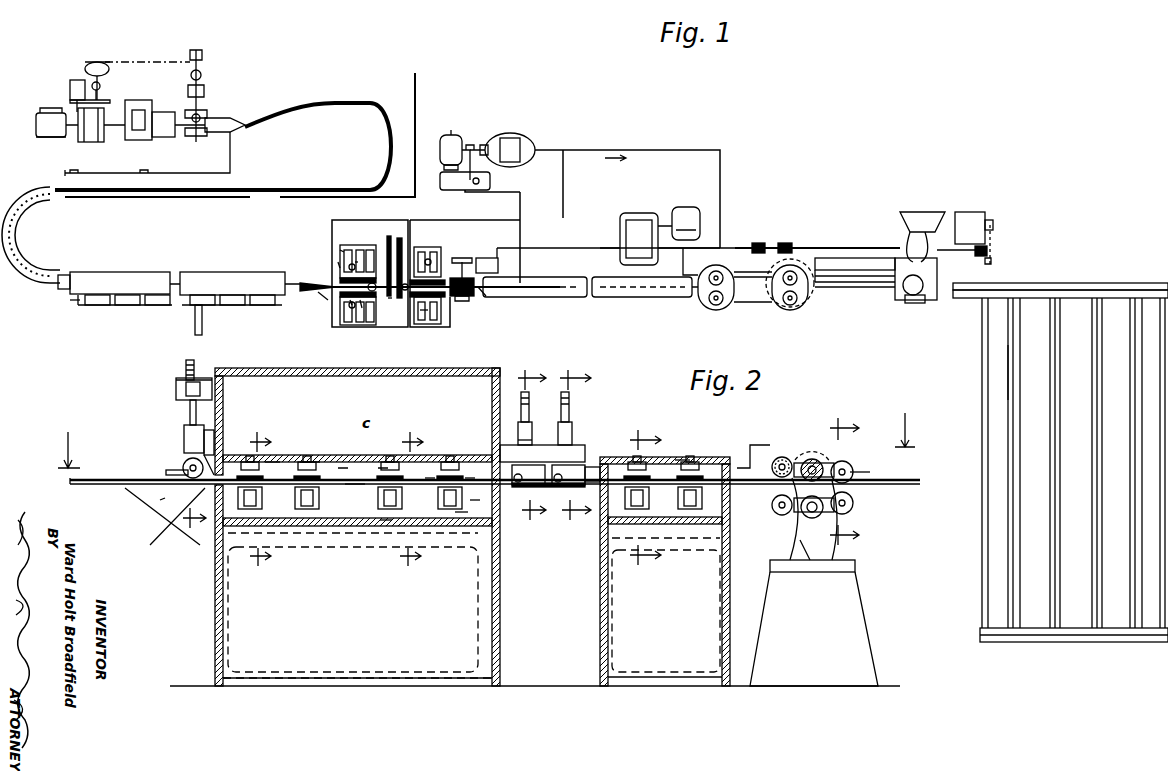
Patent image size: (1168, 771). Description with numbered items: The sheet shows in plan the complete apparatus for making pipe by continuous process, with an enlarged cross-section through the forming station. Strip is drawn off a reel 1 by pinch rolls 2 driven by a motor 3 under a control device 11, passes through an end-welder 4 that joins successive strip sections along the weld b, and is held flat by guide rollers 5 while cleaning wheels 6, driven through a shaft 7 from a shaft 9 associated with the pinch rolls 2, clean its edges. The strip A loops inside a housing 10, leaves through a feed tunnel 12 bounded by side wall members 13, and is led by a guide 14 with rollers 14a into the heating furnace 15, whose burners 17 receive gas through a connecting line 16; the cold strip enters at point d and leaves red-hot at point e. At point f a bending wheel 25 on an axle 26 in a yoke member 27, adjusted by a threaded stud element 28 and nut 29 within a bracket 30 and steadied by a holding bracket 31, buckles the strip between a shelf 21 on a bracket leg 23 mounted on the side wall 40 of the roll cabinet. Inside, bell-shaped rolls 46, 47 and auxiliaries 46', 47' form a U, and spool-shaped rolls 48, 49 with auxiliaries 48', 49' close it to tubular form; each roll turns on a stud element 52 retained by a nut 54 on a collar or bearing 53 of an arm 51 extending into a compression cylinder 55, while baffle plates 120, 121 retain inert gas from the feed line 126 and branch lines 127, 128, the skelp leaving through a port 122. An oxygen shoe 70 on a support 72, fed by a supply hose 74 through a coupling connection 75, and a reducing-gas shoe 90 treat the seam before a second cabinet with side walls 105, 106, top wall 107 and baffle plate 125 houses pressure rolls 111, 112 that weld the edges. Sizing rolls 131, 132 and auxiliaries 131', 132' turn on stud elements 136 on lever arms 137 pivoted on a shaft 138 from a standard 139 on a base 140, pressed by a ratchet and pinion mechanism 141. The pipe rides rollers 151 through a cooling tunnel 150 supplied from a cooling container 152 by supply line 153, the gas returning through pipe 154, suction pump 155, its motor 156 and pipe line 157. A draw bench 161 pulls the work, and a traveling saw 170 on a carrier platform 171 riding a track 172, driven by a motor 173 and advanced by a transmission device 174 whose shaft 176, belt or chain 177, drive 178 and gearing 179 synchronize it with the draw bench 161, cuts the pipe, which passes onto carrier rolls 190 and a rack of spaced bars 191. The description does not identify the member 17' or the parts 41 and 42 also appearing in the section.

In FIG. 1, the reel 1 is at (45, 113).
In FIG. 1, the pinch rolls 2 is at (86, 142).
In FIG. 1, the motor 3 is at (70, 90).
In FIG. 2, the motor 3 is at (485, 440).
In FIG. 1, the end-welder 4 is at (138, 140).
In FIG. 2, the end-welder 4 is at (190, 450).
In FIG. 1, the guide roller 5 is at (170, 137).
In FIG. 2, the guide roller 5 is at (260, 500).
In FIG. 1, the cleaning wheels 6 is at (160, 62).
In FIG. 2, the cleaning wheels 6 is at (412, 502).
In FIG. 1, the shaft 7 is at (202, 112).
In FIG. 2, the shaft 7 is at (532, 447).
In FIG. 1, the shaft 9 is at (102, 86).
In FIG. 2, the shaft 9 is at (575, 447).
In FIG. 1, the housing 10 is at (413, 84).
In FIG. 1, the control device 11 is at (97, 62).
In FIG. 2, the control device 11 is at (649, 498).
In FIG. 1, the feed tunnel 12 is at (105, 198).
In FIG. 2, the feed tunnel 12 is at (848, 480).
In FIG. 1, the side wall members 13 is at (172, 175).
In FIG. 1, the guide 14 is at (18, 258).
In FIG. 1, the rollers 14a is at (12, 228).
In FIG. 1, the heating furnace 15 is at (152, 268).
In FIG. 1, the connecting line 16 is at (130, 306).
In FIG. 1, the gas jets or burners 17 is at (67, 308).
In FIG. 2, the support arm 17' is at (335, 543).
In FIG. 2, the shelf 21 is at (140, 486).
In FIG. 2, the bracket leg 23 is at (161, 516).
In FIG. 1, the bending wheel 25 is at (318, 295).
In FIG. 2, the bending wheel 25 is at (183, 466).
In FIG. 2, the axle 26 is at (186, 450).
In FIG. 2, the yoke member 27 is at (188, 425).
In FIG. 2, the threaded stud element 28 is at (186, 365).
In FIG. 2, the adjusting nut 29 is at (176, 392).
In FIG. 2, the bracket 30 is at (176, 380).
In FIG. 2, the holding bracket 31 is at (215, 440).
In FIG. 2, the side wall 40 is at (215, 592).
In FIG. 2, the cabinet wall 41 is at (500, 604).
In FIG. 2, the upper compartment 42 is at (365, 376).
In FIG. 1, the forming and shaping roll 46 is at (332, 297).
In FIG. 1, the auxiliary bell roll 46' is at (331, 327).
In FIG. 1, the forming and shaping roll 47 is at (317, 252).
In FIG. 2, the forming and shaping roll 47 is at (316, 491).
In FIG. 1, the auxiliary bell roll 47' is at (375, 231).
In FIG. 2, the auxiliary bell roll 47' is at (475, 448).
In FIG. 1, the spool-shaped forming roll 48 is at (359, 331).
In FIG. 1, the auxiliary spool roll 48' is at (389, 329).
In FIG. 1, the spool-shaped forming roll 49 is at (339, 331).
In FIG. 1, the auxiliary spool roll 49' is at (403, 249).
In FIG. 2, the adjustable arm 51 is at (245, 510).
In FIG. 2, the stud element 52 is at (272, 462).
In FIG. 2, the collar or bearing 53 is at (300, 512).
In FIG. 2, the nut 54 is at (342, 468).
In FIG. 1, the compression cylinder 55 is at (340, 252).
In FIG. 2, the compression cylinder 55 is at (385, 522).
In FIG. 1, the shoe 70 is at (373, 292).
In FIG. 2, the shoe 70 is at (532, 481).
In FIG. 2, the support 72 is at (540, 445).
In FIG. 2, the supply hose 74 is at (521, 402).
In FIG. 2, the coupling connection 75 is at (520, 445).
In FIG. 1, the shoe 90 is at (403, 292).
In FIG. 2, the shoe 90 is at (598, 467).
In FIG. 2, the side wall 105 is at (600, 584).
In FIG. 2, the side wall 106 is at (730, 566).
In FIG. 2, the top wall 107 is at (752, 445).
In FIG. 1, the pressure roll 111 is at (427, 312).
In FIG. 1, the pressure roll 112 is at (432, 272).
In FIG. 2, the baffle plate 120 is at (312, 462).
In FIG. 2, the baffle plate 121 is at (360, 486).
In FIG. 2, the port 122 is at (478, 502).
In FIG. 1, the baffle plate 125 is at (688, 207).
In FIG. 2, the baffle plate 125 is at (695, 512).
In FIG. 1, the feed line 126 is at (540, 232).
In FIG. 1, the branch line 127 is at (332, 232).
In FIG. 1, the branch line 128 is at (428, 258).
In FIG. 1, the shaping and sizing roll 131 is at (496, 292).
In FIG. 2, the shaping and sizing roll 131 is at (894, 471).
In FIG. 1, the auxiliary shaping and forming roll 131' is at (461, 297).
In FIG. 2, the auxiliary shaping and forming roll 131' is at (777, 446).
In FIG. 2, the shaping and sizing roll 132 is at (880, 506).
In FIG. 2, the auxiliary shaping and forming roll 132' is at (786, 514).
In FIG. 2, the stud element 136 is at (852, 470).
In FIG. 2, the lever arm 137 is at (796, 505).
In FIG. 2, the shaft 138 is at (802, 540).
In FIG. 2, the standard 139 is at (858, 566).
In FIG. 2, the base 140 is at (814, 629).
In FIG. 2, the ratchet and pinion mechanism 141 is at (830, 456).
In FIG. 1, the cooling tunnel 150 is at (545, 297).
In FIG. 1, the rollers 151 is at (580, 277).
In FIG. 1, the cooling container 152 is at (530, 135).
In FIG. 1, the supply line 153 is at (655, 150).
In FIG. 1, the pipe 154 is at (522, 192).
In FIG. 1, the suction pump 155 is at (490, 178).
In FIG. 1, the motor 156 is at (452, 135).
In FIG. 1, the pipe line 157 is at (472, 145).
In FIG. 1, the continuous draw bench 161 is at (742, 310).
In FIG. 1, the traveling saw 170 is at (903, 300).
In FIG. 1, the carrier platform 171 is at (850, 258).
In FIG. 1, the track 172 is at (848, 284).
In FIG. 1, the motor 173 is at (918, 303).
In FIG. 1, the speed controlled power transmission device 174 is at (960, 212).
In FIG. 1, the shaft 176 is at (812, 248).
In FIG. 1, the transmission belt or chain 177 is at (1000, 232).
In FIG. 1, the gearing or chain belt drive 178 is at (992, 260).
In FIG. 1, the gearing 179 is at (786, 243).
In FIG. 1, the carrier rolls 190 is at (1048, 298).
In FIG. 1, the spaced bars 191 is at (1010, 370).
In FIG. 1, the heated strip A is at (297, 118).
In FIG. 1, the weld b is at (232, 118).
In FIG. 1, the furnace entry point d is at (70, 275).
In FIG. 2, the furnace entry point d is at (462, 514).
In FIG. 1, the furnace exit point e is at (312, 287).
In FIG. 2, the furnace exit point e is at (92, 478).
In FIG. 2, the initial bending point f is at (165, 500).